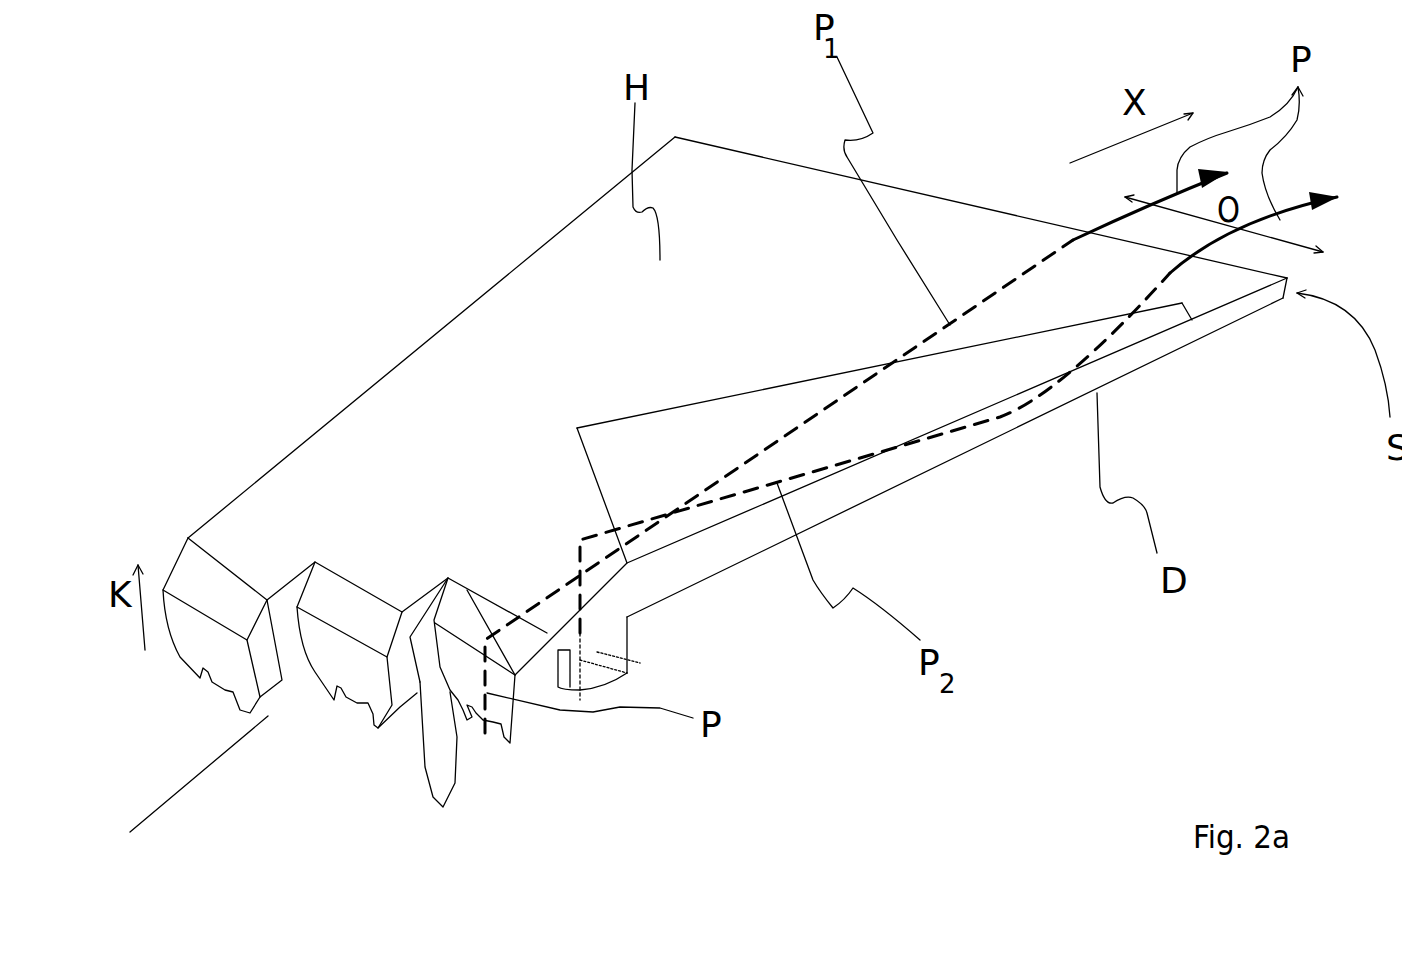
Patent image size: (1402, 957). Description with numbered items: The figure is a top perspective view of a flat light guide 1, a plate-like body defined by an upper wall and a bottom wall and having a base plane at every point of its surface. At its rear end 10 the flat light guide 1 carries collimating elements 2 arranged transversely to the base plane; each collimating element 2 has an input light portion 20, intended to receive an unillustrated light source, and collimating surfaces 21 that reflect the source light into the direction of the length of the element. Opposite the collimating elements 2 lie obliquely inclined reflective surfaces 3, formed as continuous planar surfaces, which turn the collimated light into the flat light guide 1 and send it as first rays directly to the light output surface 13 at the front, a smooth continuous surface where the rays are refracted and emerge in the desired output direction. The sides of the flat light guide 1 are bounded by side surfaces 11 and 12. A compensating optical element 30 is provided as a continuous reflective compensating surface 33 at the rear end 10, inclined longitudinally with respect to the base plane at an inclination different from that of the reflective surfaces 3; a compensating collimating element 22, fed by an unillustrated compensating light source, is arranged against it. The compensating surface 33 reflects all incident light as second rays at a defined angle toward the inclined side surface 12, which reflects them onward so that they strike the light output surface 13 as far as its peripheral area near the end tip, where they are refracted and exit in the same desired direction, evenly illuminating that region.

The flat light guide 1 is at (698, 452).
The collimating element 2 is at (193, 630).
The reflective surface 3 is at (468, 607).
The rear end 10 is at (273, 763).
The side surface 11 is at (737, 289).
The side surface 12 is at (837, 488).
The light output surface 13 is at (937, 192).
The input light portion 20 is at (215, 692).
The collimating surfaces 21 is at (467, 662).
The compensating collimating element 22 is at (593, 652).
The compensating optical element 30 is at (691, 400).
The continuous reflective compensating surface 33 is at (879, 433).